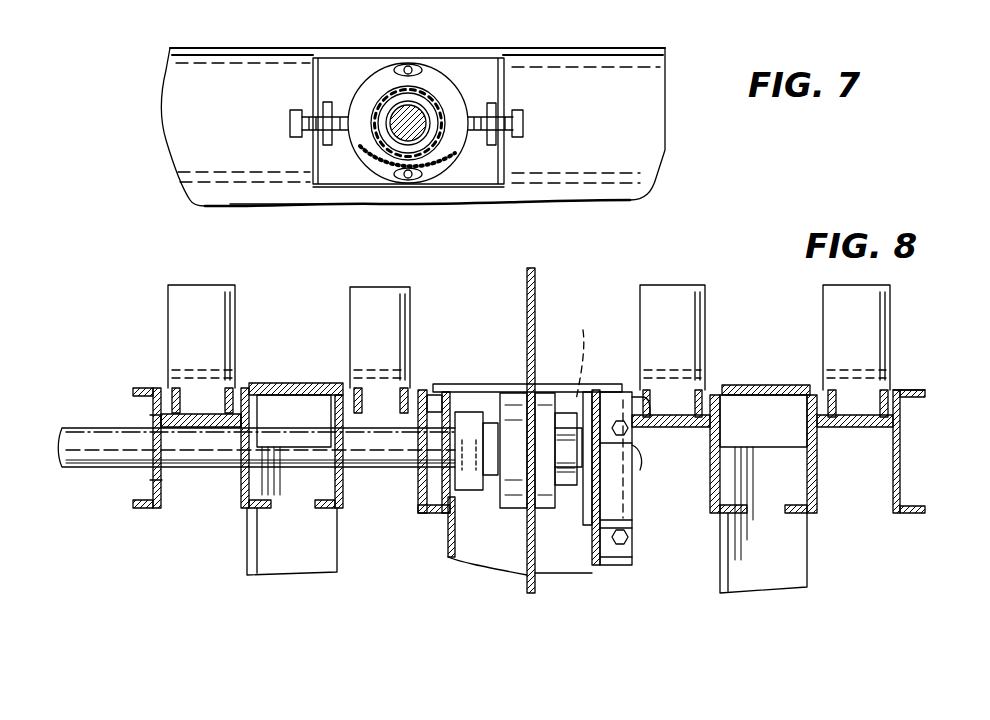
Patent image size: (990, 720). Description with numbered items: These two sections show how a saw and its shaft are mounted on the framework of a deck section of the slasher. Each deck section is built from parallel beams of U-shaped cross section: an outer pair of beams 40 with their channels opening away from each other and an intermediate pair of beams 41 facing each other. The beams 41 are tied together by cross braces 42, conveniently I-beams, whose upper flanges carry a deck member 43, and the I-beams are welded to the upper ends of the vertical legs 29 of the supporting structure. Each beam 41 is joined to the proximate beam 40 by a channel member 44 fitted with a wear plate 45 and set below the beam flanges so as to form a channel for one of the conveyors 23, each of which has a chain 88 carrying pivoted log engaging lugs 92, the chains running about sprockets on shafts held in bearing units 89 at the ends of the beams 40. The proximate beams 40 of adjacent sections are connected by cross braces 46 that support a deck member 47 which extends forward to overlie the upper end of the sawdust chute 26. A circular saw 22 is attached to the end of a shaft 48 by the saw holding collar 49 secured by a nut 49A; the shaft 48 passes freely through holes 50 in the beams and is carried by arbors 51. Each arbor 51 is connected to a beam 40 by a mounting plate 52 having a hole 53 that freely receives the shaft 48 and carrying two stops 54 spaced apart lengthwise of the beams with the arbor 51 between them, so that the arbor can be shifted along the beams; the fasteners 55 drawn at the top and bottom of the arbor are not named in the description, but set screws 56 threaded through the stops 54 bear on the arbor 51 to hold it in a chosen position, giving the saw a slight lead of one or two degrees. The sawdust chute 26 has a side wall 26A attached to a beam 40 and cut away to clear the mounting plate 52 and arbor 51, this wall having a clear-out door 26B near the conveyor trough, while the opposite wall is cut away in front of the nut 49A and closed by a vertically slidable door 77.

In FIG. 8, the circular saw 22 is at (535, 578).
In FIG. 8, the conveyor 23 is at (340, 355).
In FIG. 8, the sawdust chute 26 is at (483, 566).
In FIG. 8, the side wall 26A is at (445, 548).
In FIG. 7, the clear-out door 26B is at (205, 190).
In FIG. 8, the clear-out door 26B is at (597, 566).
In FIG. 8, the vertical leg 29 is at (300, 566).
In FIG. 7, the beam 40 is at (187, 137).
In FIG. 8, the beam 40 is at (150, 510).
In FIG. 8, the beam 41 is at (318, 493).
In FIG. 8, the cross brace 42 is at (298, 415).
In FIG. 8, the deck member 43 is at (265, 385).
In FIG. 8, the channel member 44 is at (205, 430).
In FIG. 8, the wear plate 45 is at (152, 407).
In FIG. 8, the cross brace 46 is at (578, 354).
In FIG. 8, the deck member 47 is at (513, 383).
In FIG. 7, the shaft 48 is at (412, 118).
In FIG. 8, the shaft 48 is at (88, 456).
In FIG. 8, the saw holding collar 49 is at (545, 393).
In FIG. 8, the nut 49A is at (571, 488).
In FIG. 8, the hole 50 is at (150, 474).
In FIG. 7, the arbor 51 is at (458, 103).
In FIG. 8, the arbor 51 is at (470, 495).
In FIG. 7, the mounting plate 52 is at (347, 70).
In FIG. 8, the mounting plate 52 is at (436, 384).
In FIG. 8, the hole 53 is at (446, 520).
In FIG. 7, the stop 54 is at (320, 110).
In FIG. 7, the bolt 55 is at (409, 66).
In FIG. 7, the set screw 56 is at (297, 137).
In FIG. 8, the vertically slidable door 77 is at (632, 532).
In FIG. 8, the chain 88 is at (886, 386).
In FIG. 8, the bearing unit 89 is at (622, 488).
In FIG. 8, the log engaging lug 92 is at (182, 298).